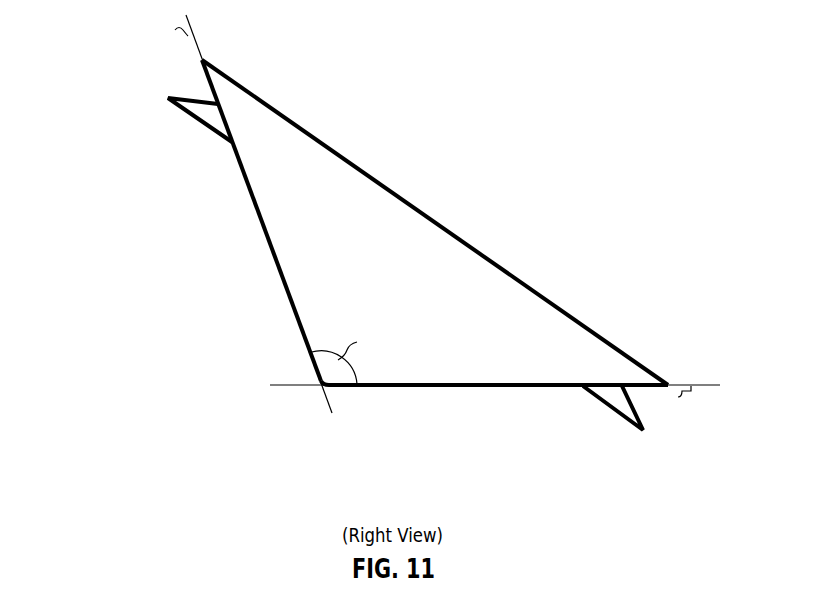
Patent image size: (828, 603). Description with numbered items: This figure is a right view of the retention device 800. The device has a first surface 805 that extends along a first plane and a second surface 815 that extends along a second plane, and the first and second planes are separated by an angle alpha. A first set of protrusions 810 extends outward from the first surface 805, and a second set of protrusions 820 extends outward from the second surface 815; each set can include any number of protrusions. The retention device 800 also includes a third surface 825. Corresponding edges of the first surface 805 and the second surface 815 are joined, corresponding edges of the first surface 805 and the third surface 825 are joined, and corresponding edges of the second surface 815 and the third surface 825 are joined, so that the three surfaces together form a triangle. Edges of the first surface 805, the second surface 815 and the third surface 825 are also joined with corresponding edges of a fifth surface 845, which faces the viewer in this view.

The retention device 800 is at (401, 266).
The first surface 805 is at (468, 387).
The first set of protrusions 810 is at (620, 397).
The second surface 815 is at (273, 255).
The second set of protrusions 820 is at (205, 112).
The third surface 825 is at (412, 205).
The fifth surface 845 is at (398, 276).